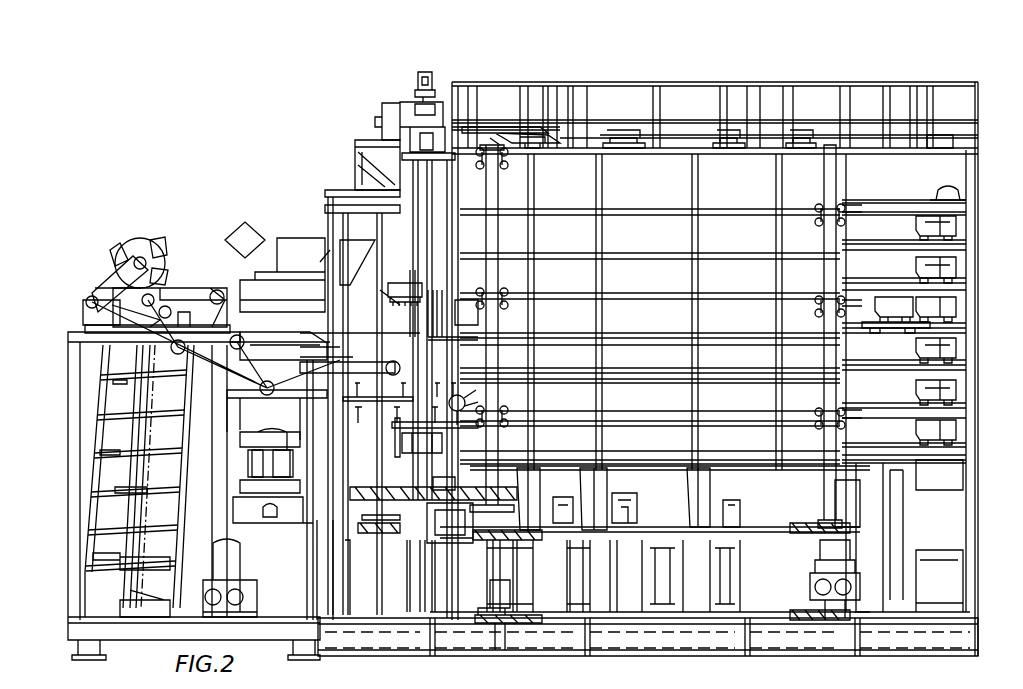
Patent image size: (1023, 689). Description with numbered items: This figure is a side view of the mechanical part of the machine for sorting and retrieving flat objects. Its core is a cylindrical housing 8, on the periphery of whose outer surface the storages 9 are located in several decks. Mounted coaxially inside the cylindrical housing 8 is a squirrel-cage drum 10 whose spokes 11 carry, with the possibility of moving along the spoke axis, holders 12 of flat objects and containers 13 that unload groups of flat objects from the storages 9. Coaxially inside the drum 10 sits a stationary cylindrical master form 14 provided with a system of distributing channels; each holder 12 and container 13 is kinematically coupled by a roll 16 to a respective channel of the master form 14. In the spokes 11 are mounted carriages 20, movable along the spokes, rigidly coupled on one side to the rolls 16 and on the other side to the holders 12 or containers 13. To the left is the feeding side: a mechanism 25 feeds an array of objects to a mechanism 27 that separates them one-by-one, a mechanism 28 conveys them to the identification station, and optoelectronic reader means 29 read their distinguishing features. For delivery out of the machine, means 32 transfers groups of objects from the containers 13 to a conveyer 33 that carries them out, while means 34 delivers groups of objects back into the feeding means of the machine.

The cylindrical housing 8 is at (972, 182).
The storages 9 is at (945, 392).
The squirrel-cage drum 10 is at (822, 186).
The spokes 11 is at (836, 366).
The holders of flat objects 12 is at (955, 200).
The containers 13 is at (930, 310).
The stationary cylindrical master form 14 is at (578, 175).
The roll 16 is at (510, 150).
The carriages 20 is at (838, 210).
The mechanism for feeding an array of objects 25 is at (107, 537).
The mechanism for separating objects 27 is at (105, 290).
The mechanism for conveying objects 28 is at (192, 300).
The optoelectronic reader means 29 is at (285, 240).
The means for transferring groups of objects 32 is at (355, 182).
The conveyer 33 is at (422, 86).
The means for delivering groups of objects into the feeding means 34 is at (300, 410).